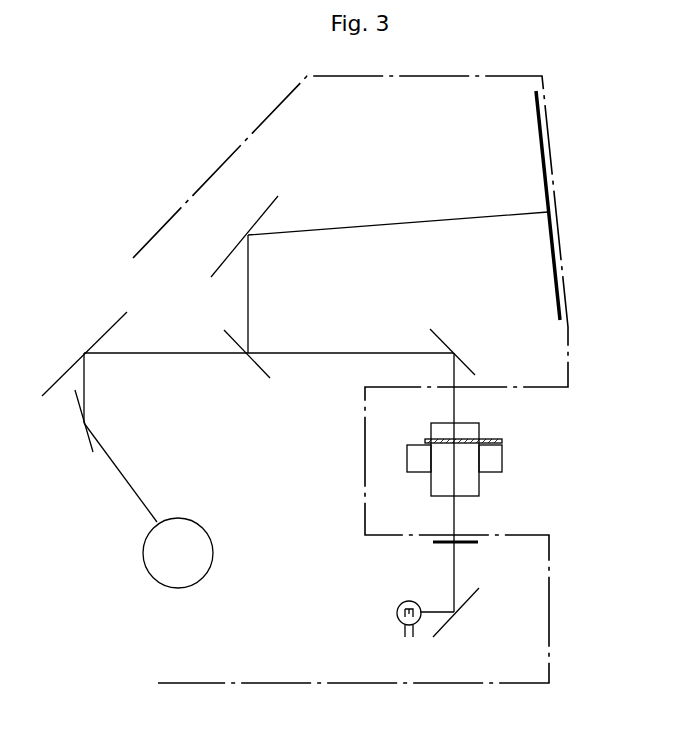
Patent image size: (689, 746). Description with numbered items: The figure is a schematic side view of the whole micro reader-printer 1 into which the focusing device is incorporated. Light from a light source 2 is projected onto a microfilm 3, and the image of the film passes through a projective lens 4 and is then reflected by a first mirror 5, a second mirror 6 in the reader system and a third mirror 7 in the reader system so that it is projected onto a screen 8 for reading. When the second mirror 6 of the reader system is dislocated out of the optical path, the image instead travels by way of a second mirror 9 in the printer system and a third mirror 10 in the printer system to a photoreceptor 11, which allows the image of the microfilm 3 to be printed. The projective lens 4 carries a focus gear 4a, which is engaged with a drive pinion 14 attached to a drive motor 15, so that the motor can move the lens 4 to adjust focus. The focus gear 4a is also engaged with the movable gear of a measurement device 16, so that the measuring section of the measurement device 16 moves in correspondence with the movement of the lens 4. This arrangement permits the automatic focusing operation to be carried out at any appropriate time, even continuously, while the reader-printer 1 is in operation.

The micro reader-printer 1 is at (568, 268).
The light source 2 is at (397, 611).
The microfilm 3 is at (445, 544).
The projective lens 4 is at (463, 487).
The focus gear 4a is at (472, 437).
The first mirror 5 is at (438, 337).
The second mirror in reader system 6 is at (262, 375).
The third mirror in reader system 7 is at (270, 205).
The screen 8 is at (557, 167).
The second mirror in printer system 9 is at (77, 355).
The third mirror in printer system 10 is at (86, 446).
The photoreceptor 11 is at (158, 548).
The drive pinion 14 is at (495, 437).
The drive motor 15 is at (495, 461).
The measurement device 16 is at (416, 458).